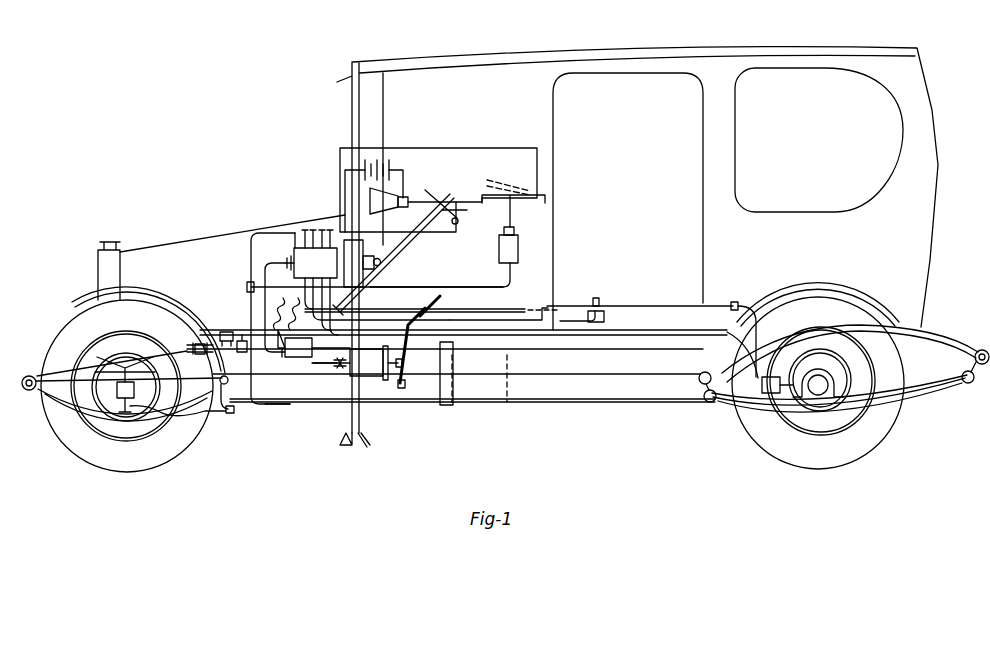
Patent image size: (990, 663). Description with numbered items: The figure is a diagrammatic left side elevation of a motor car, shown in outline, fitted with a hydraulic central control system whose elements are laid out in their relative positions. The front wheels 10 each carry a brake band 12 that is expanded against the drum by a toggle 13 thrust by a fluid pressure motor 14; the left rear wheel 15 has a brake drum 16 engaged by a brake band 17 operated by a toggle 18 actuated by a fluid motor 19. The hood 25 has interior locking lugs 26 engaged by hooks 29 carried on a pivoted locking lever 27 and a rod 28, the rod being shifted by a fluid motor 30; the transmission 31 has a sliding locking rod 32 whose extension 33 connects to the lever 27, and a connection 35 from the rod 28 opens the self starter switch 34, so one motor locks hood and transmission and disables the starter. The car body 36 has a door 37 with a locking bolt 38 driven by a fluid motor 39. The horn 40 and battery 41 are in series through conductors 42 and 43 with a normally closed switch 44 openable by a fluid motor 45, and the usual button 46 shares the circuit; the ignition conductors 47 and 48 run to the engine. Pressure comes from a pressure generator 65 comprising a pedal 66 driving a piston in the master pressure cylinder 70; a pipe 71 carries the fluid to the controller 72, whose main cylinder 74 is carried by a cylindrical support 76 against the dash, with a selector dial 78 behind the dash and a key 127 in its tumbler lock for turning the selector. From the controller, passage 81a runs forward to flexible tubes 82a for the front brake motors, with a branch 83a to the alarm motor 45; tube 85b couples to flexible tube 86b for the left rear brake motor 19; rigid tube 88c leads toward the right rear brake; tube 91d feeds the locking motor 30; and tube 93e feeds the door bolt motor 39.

The front wheels 10 is at (70, 335).
The brake ring or band 12 is at (97, 413).
The toggle 13 is at (118, 365).
The fluid pressure motor 14 is at (134, 391).
The left rear wheel 15 is at (878, 440).
The brake drum 16 is at (834, 352).
The brake band 17 is at (848, 388).
The toggle 18 is at (792, 404).
The fluid motor 19 is at (768, 395).
The hood 25 is at (143, 250).
The locking lug or hook 26 is at (230, 330).
The locking bar or lever 27 is at (190, 346).
The rod 28 is at (201, 343).
The locking members or hooks 29 is at (240, 341).
The fluid motor 30 is at (295, 355).
The transmission 31 is at (480, 395).
The rod 32 is at (440, 405).
The extension 33 is at (333, 402).
The circuit closer or switch 34 is at (275, 292).
The connection 35 is at (280, 347).
The car body 36 is at (913, 82).
The door 37 is at (637, 110).
The locking bolt 38 is at (599, 299).
The fluid motor 39 is at (604, 318).
The horn 40 is at (402, 197).
The battery 41 is at (382, 163).
The conductor 42 is at (340, 183).
The conductor 43 is at (538, 150).
The switch or circuit opener 44 is at (520, 198).
The fluid motor 45 is at (518, 250).
The button or contact 46 is at (452, 215).
The conductor 47 is at (344, 449).
The conductor 48 is at (368, 449).
The pressure generator 65 is at (376, 346).
The pedal 66 is at (412, 318).
The pressure cylinder 70 is at (350, 363).
The pipe 71 is at (253, 258).
The controller 72 is at (295, 258).
The main casting or cylinder 74 is at (305, 238).
The cylindrical support 76 is at (356, 257).
The selector dial 78 is at (387, 278).
The connecting tube or passage 81a is at (265, 231).
The flexible tubes 82a is at (213, 392).
The branch tube 83a is at (508, 283).
The tube or passage 85b is at (537, 320).
The flexible tube 86b is at (752, 306).
The rigid tube 88c is at (488, 308).
The tube 91d is at (325, 350).
The tube 93e is at (565, 325).
The key 127 is at (379, 264).